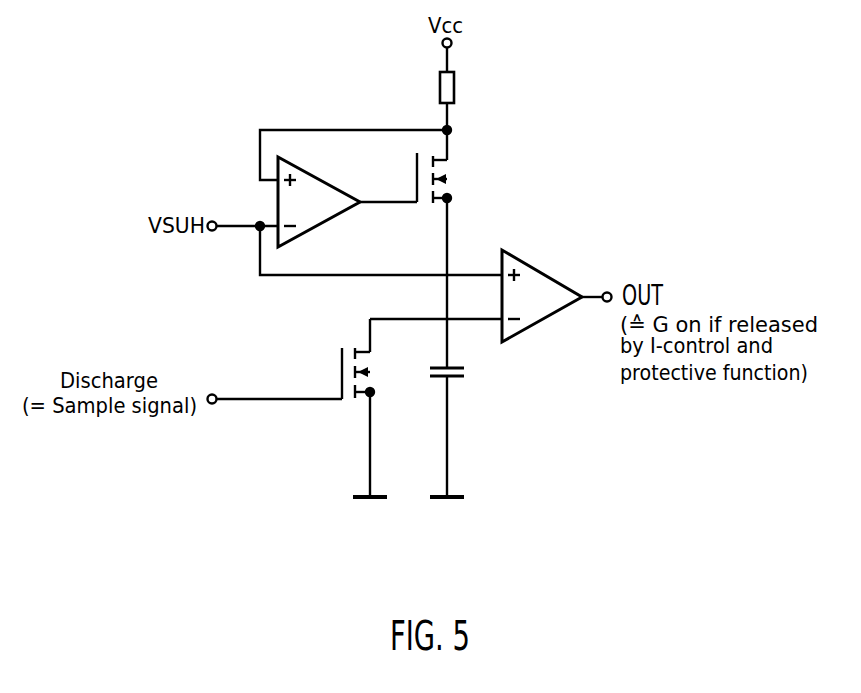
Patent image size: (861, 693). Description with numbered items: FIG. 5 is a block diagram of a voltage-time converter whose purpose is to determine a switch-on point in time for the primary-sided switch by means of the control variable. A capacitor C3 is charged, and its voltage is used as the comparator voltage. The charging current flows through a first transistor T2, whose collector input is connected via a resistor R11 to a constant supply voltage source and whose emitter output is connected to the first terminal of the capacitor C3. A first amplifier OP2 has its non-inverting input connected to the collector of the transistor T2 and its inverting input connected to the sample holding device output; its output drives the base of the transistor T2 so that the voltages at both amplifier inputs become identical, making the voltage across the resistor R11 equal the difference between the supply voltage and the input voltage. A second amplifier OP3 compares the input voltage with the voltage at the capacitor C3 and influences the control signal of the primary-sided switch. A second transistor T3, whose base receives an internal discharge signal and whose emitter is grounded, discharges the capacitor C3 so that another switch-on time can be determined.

The resistor R11 is at (426, 88).
The first transistor T2 is at (447, 178).
The second transistor T3 is at (339, 359).
The capacitor C3 is at (434, 374).
The first amplifier OP2 is at (319, 202).
The second amplifier OP3 is at (542, 296).